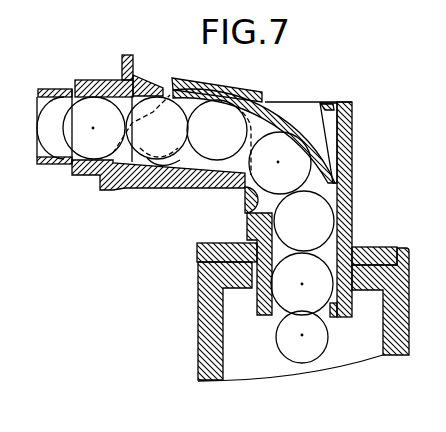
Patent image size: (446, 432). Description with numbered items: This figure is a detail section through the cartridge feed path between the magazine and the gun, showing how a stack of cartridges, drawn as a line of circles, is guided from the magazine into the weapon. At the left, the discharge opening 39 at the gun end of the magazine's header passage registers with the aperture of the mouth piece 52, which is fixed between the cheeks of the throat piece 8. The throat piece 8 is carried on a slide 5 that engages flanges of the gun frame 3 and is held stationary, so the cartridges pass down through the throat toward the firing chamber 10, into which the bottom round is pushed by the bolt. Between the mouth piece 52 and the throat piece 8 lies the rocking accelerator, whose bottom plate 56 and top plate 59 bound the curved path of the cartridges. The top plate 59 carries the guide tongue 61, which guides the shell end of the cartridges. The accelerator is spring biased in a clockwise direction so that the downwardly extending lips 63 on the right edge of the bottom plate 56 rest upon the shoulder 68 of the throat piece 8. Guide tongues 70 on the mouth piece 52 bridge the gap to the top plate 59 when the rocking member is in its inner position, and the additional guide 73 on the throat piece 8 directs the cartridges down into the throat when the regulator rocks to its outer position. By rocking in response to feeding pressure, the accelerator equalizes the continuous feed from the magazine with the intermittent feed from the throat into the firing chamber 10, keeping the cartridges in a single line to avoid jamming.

The gun frame 3 is at (398, 305).
The slide 5 is at (220, 256).
The throat piece 8 is at (352, 203).
The firing chamber 10 is at (292, 352).
The discharge opening 39 is at (58, 99).
The mouth piece 52 is at (95, 82).
The bottom plate 56 is at (187, 182).
The top plate 59 is at (232, 87).
The guide tongue 61 is at (276, 114).
The lips 63 is at (245, 209).
The shoulder 68 is at (273, 210).
The guide tongues 70 is at (143, 82).
The additional guide 73 is at (317, 108).